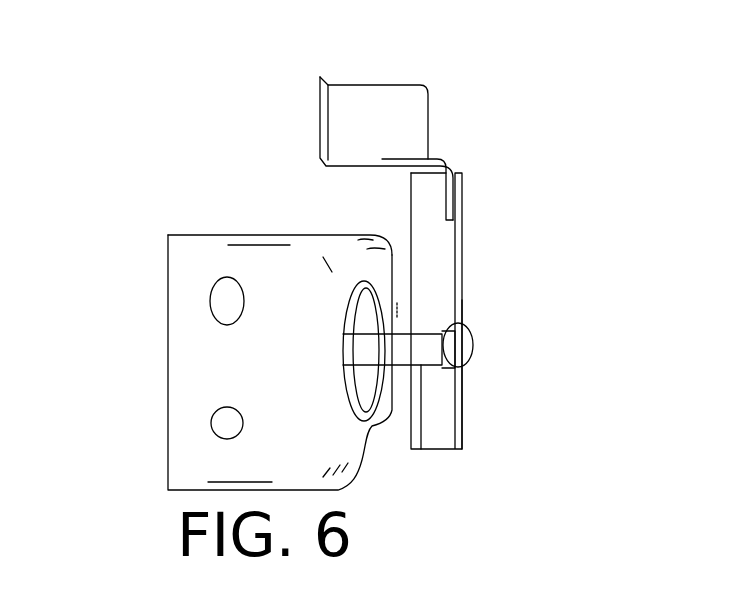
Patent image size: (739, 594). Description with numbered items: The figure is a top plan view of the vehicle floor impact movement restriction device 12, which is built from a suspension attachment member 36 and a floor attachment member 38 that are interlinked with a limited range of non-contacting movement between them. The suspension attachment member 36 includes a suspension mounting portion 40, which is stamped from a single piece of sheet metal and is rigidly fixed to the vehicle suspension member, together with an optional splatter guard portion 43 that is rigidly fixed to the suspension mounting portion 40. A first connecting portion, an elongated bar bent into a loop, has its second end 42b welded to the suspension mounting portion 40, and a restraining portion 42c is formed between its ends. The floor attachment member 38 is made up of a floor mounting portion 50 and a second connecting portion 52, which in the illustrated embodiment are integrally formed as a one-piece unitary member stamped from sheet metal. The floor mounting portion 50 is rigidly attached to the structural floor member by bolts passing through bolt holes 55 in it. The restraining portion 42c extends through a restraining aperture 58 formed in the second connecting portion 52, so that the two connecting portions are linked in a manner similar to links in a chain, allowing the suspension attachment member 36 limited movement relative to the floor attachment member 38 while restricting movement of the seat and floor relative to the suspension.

The vehicle floor impact movement restriction device 12 is at (108, 190).
The suspension attachment member 36 is at (480, 278).
The floor attachment member 38 is at (216, 221).
The suspension mounting portion 40 is at (460, 400).
The second end 42b is at (447, 345).
The restraining portion 42c is at (367, 347).
The splatter guard portion 43 is at (398, 105).
The floor mounting portion 50 is at (198, 367).
The second connecting portion 52 is at (383, 268).
The mounting holes 55 is at (210, 308).
The restraining aperture 58 is at (368, 300).